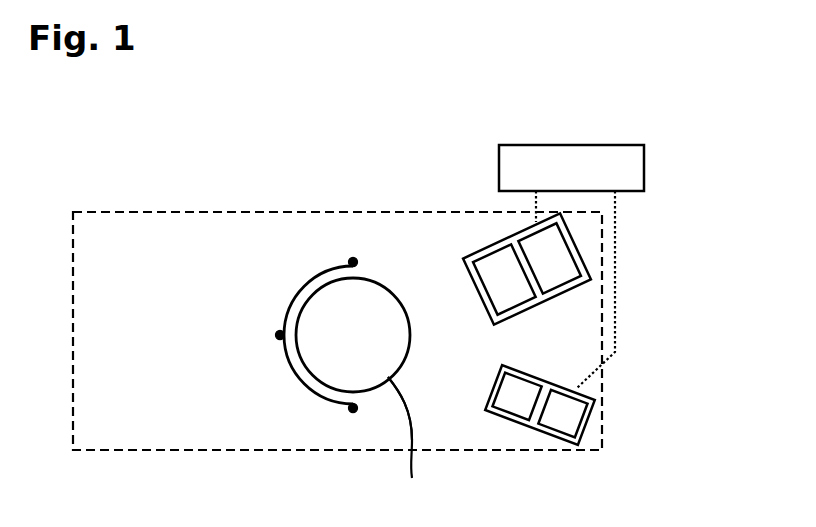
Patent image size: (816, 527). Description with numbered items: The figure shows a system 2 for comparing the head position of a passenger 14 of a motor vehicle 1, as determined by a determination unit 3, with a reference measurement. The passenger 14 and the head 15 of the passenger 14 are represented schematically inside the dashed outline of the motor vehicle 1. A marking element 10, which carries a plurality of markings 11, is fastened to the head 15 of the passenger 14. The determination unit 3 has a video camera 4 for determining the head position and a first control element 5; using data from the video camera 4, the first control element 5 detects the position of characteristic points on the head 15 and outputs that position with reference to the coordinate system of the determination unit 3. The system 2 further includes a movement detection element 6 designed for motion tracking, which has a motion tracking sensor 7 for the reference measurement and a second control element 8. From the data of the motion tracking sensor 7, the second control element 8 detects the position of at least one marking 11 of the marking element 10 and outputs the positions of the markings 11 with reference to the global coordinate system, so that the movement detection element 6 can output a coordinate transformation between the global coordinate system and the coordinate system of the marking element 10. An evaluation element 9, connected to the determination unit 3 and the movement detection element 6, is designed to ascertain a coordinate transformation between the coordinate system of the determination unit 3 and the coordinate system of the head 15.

The motor vehicle 1 is at (122, 212).
The system 2 is at (667, 213).
The determination unit 3 is at (493, 415).
The video camera 4 is at (515, 405).
The first control element 5 is at (557, 413).
The movement detection element 6 is at (573, 290).
The motion tracking sensor 7 is at (512, 295).
The second control element 8 is at (560, 257).
The evaluation element 9 is at (527, 145).
The marking element 10 is at (302, 382).
The markings 11 is at (353, 262).
The passenger 14 is at (413, 442).
The head 15 is at (400, 408).